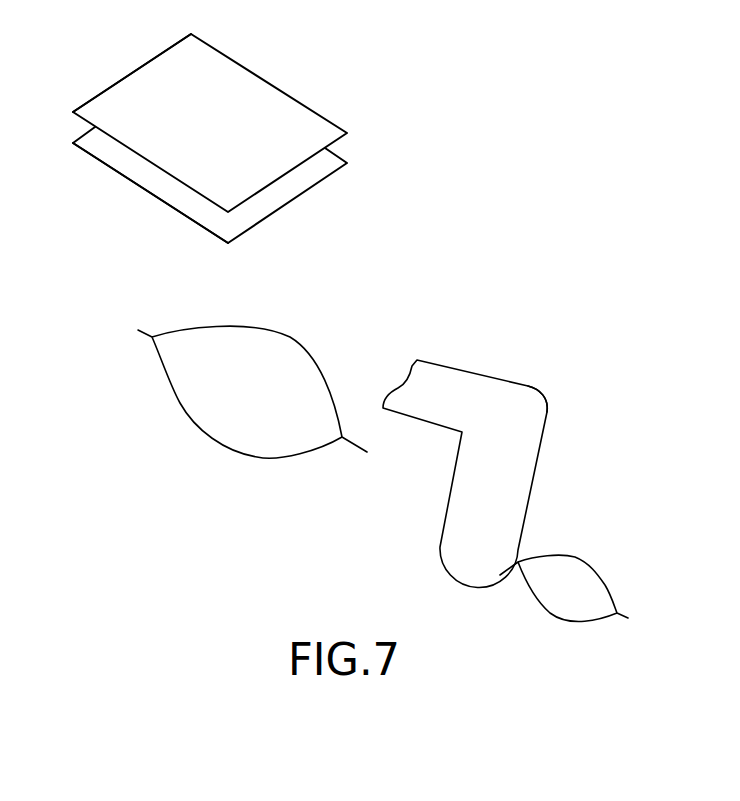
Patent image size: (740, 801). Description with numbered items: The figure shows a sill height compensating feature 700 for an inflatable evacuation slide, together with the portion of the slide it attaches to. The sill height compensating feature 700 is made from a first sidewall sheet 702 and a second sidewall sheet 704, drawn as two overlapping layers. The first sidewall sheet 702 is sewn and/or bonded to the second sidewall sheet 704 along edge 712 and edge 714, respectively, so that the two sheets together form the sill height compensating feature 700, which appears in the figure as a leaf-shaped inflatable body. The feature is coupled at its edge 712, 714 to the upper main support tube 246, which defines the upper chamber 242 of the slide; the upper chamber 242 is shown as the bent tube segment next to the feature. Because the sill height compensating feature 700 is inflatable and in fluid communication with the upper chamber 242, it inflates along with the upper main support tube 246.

The sill height compensating feature 700 is at (228, 347).
The first sidewall sheet 702 is at (232, 98).
The second sidewall sheet 704 is at (180, 192).
The edge 712 is at (85, 102).
The edge 714 is at (117, 172).
The upper chamber 242 is at (518, 463).
The upper main support tube 246 is at (535, 387).